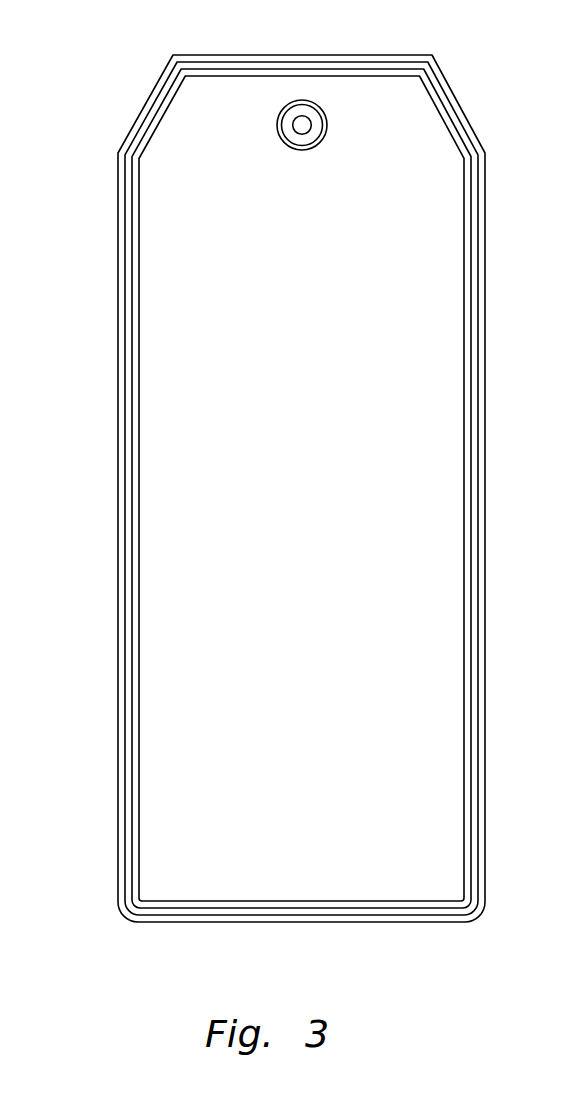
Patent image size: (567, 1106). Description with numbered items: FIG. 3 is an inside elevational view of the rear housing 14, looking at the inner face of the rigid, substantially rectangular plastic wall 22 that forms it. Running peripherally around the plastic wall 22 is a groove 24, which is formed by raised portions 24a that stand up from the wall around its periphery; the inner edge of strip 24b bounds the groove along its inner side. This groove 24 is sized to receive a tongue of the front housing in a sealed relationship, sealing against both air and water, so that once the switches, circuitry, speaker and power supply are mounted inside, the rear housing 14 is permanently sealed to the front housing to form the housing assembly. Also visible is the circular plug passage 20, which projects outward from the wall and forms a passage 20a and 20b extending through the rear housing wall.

The rear housing 14 is at (245, 923).
The circular plug passage 20 is at (318, 103).
The passage 20a is at (283, 112).
The passage 20b is at (296, 120).
The plastic wall 22 is at (445, 330).
The groove 24 is at (253, 488).
The raised portions 24a is at (119, 325).
The inner edge of strip 24b is at (138, 330).